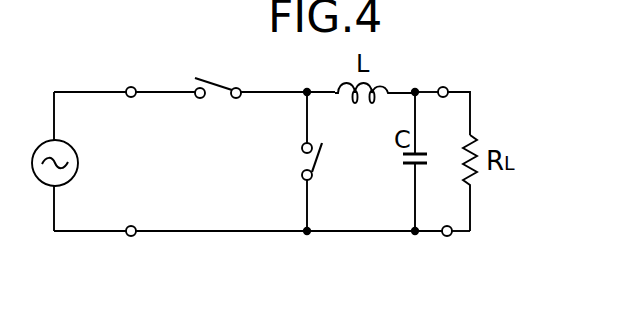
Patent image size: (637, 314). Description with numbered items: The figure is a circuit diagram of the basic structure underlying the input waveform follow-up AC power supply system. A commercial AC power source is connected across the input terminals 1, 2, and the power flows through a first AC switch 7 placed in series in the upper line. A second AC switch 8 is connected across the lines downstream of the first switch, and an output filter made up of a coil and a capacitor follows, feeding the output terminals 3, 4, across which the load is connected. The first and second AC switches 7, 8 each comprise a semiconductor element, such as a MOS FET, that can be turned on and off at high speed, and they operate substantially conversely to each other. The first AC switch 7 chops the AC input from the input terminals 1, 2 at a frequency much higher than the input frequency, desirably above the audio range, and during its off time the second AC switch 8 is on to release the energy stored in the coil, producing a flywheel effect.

The input terminal 1 is at (131, 244).
The input terminal 2 is at (131, 75).
The output terminal 3 is at (449, 246).
The output terminal 4 is at (442, 77).
The first AC switch 7 is at (216, 78).
The second AC switch 8 is at (318, 158).